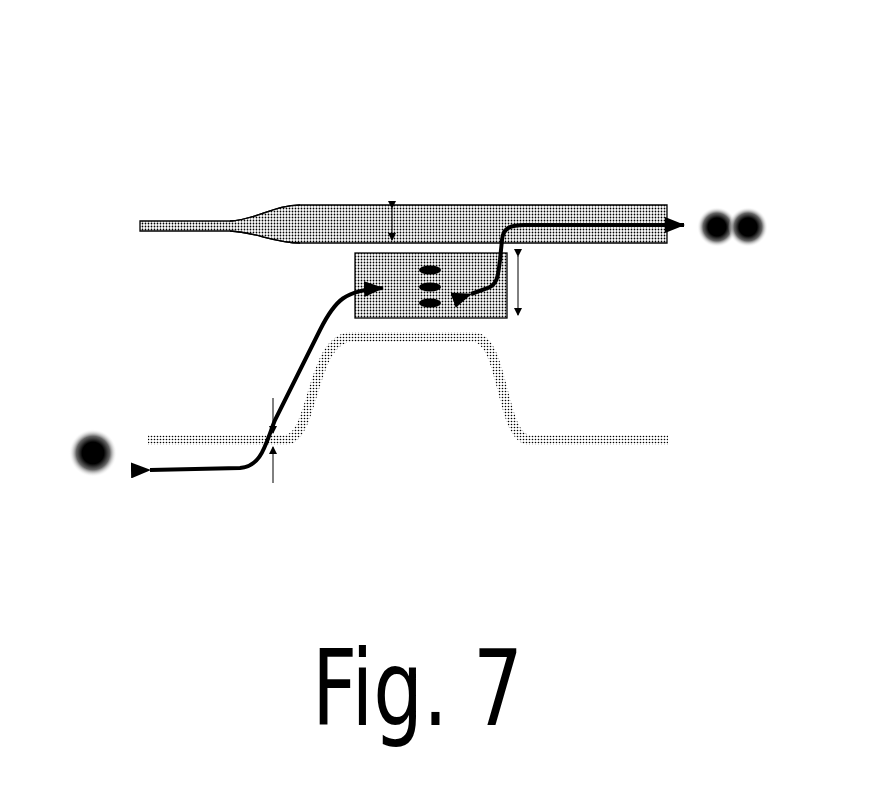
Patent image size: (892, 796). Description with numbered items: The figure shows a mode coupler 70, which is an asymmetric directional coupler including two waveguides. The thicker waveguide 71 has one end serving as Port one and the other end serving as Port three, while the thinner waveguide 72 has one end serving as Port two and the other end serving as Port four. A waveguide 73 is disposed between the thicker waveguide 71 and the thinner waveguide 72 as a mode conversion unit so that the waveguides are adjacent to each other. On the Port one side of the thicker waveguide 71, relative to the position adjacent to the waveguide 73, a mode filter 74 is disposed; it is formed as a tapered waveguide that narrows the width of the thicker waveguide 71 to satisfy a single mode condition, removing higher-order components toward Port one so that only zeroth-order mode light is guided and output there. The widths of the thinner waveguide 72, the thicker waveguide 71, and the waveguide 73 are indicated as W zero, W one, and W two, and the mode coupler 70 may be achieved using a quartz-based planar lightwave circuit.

The mode coupler 70 is at (586, 97).
The thicker waveguide 71 is at (467, 207).
The thinner waveguide 72 is at (400, 343).
The waveguide 73 is at (495, 319).
The mode filter 74 is at (264, 203).